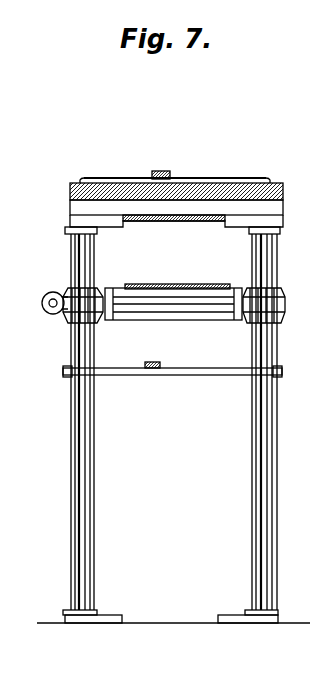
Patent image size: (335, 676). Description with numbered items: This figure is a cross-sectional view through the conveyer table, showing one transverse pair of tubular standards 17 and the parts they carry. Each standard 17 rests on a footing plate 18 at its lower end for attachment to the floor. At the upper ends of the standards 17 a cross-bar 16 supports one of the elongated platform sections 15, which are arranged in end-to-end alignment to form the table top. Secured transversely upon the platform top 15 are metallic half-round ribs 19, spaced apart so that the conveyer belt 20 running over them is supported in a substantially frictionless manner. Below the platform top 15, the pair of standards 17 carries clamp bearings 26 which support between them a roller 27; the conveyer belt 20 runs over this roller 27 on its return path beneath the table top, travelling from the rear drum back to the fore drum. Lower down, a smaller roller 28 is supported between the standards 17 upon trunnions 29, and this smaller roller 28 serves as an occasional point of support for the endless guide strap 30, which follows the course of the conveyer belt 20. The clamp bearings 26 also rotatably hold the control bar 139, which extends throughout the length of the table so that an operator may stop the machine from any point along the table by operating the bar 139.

The platform section 15 is at (237, 183).
The cross-bar 16 is at (195, 222).
The tubular standard 17 is at (95, 446).
The footing plate 18 is at (226, 615).
The half-round rib 19 is at (254, 184).
The conveyer belt 20 is at (185, 178).
The clamp bearing 26 is at (76, 288).
The roller 27 is at (166, 319).
The smaller roller 28 is at (220, 375).
The trunnion 29 is at (63, 372).
The endless guide strap 30 is at (160, 171).
The control bar 139 is at (50, 313).